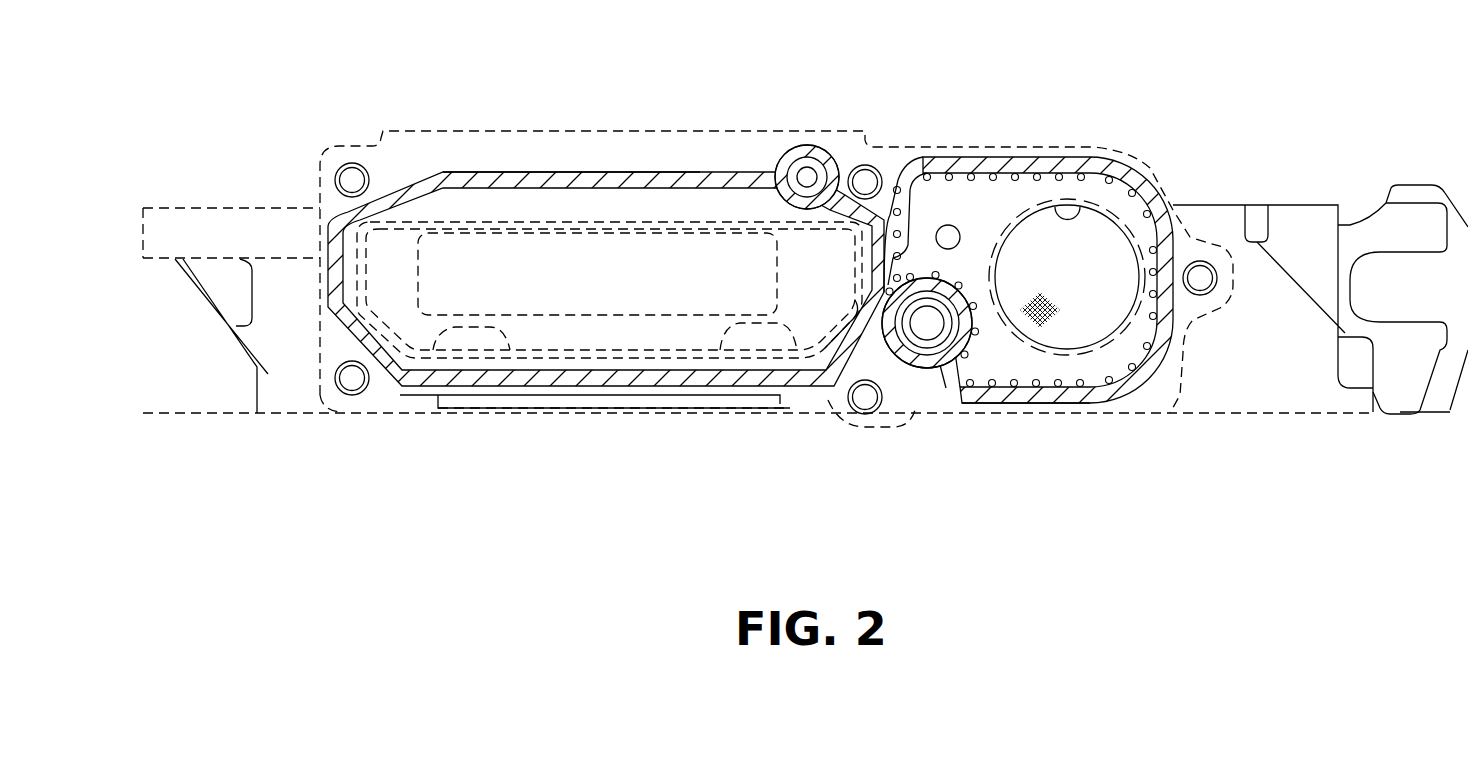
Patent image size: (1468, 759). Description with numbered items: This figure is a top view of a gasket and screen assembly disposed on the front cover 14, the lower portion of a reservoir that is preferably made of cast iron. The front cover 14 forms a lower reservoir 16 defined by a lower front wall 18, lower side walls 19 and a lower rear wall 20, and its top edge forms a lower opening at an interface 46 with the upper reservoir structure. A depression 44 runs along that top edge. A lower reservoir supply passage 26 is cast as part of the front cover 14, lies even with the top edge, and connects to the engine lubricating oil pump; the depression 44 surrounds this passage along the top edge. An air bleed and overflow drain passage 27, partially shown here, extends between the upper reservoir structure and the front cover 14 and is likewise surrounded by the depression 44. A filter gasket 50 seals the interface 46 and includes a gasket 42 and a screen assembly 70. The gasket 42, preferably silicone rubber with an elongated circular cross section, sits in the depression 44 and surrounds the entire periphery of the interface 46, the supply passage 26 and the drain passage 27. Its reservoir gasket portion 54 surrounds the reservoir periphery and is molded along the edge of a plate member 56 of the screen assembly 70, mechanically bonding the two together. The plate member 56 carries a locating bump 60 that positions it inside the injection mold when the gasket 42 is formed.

The front cover 14 is at (297, 413).
The lower reservoir 16 is at (1084, 208).
The lower front wall 18 is at (660, 411).
The lower side walls 19 is at (935, 170).
The lower rear wall 20 is at (640, 155).
The lower reservoir supply passage 26 is at (927, 337).
The air bleed and overflow drain passage 27 is at (813, 167).
The gasket 42 is at (458, 376).
The depression 44 is at (445, 172).
The interface 46 is at (382, 388).
The filter gasket 50 is at (887, 298).
The reservoir gasket portion 54 is at (1103, 388).
The plate member 56 is at (993, 208).
The locating bump 60 is at (958, 248).
The screen assembly 70 is at (1117, 227).